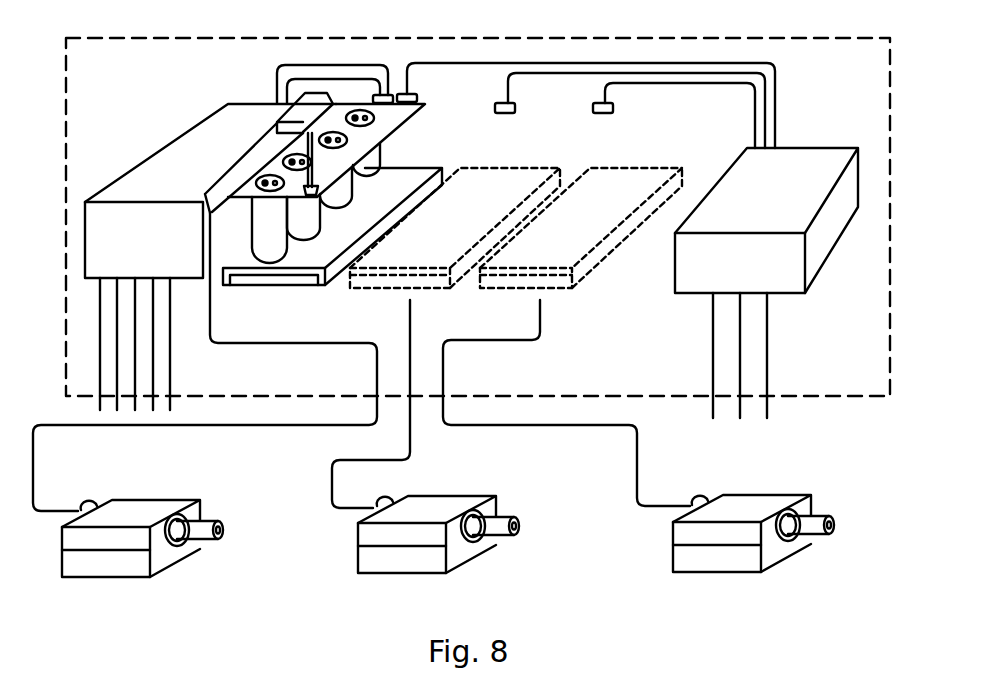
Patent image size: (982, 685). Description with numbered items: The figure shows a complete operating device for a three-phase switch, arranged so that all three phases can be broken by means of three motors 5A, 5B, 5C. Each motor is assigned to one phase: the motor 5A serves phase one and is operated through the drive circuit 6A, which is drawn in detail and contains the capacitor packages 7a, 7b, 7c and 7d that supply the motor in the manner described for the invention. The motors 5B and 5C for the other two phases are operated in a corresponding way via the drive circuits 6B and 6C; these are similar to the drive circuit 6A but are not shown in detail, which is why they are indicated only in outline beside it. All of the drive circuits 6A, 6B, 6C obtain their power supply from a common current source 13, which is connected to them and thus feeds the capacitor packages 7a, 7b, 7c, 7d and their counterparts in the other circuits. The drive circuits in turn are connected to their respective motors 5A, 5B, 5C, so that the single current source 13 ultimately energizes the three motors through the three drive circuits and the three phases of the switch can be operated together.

The common current source 13 is at (797, 160).
The drive circuit 6A is at (337, 210).
The drive circuit 6B is at (528, 177).
The drive circuit 6C is at (630, 178).
The capacitor package 7a is at (273, 247).
The capacitor package 7b is at (308, 220).
The capacitor package 7c is at (340, 184).
The capacitor package 7d is at (375, 157).
The motor 5A is at (163, 555).
The motor 5B is at (457, 557).
The motor 5C is at (773, 550).